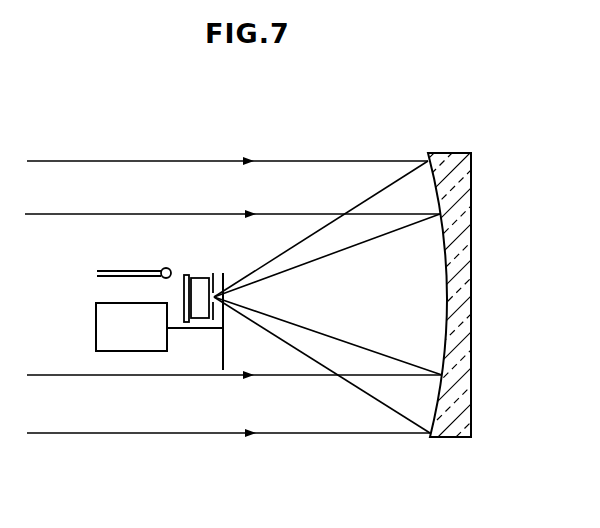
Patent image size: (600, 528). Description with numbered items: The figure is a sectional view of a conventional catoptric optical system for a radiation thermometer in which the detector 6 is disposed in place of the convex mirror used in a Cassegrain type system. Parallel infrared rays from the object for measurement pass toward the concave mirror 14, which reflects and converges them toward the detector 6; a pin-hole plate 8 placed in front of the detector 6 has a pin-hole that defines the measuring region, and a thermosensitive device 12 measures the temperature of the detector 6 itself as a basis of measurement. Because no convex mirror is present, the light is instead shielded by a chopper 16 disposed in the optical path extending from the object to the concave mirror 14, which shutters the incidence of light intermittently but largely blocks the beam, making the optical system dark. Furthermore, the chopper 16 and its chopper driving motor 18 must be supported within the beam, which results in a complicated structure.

The detector 6 is at (200, 279).
The pin-hole plate 8 is at (216, 274).
The thermosensitive device 12 is at (164, 268).
The concave mirror 14 is at (455, 152).
The chopper 16 is at (224, 352).
The chopper driving motor 18 is at (137, 338).